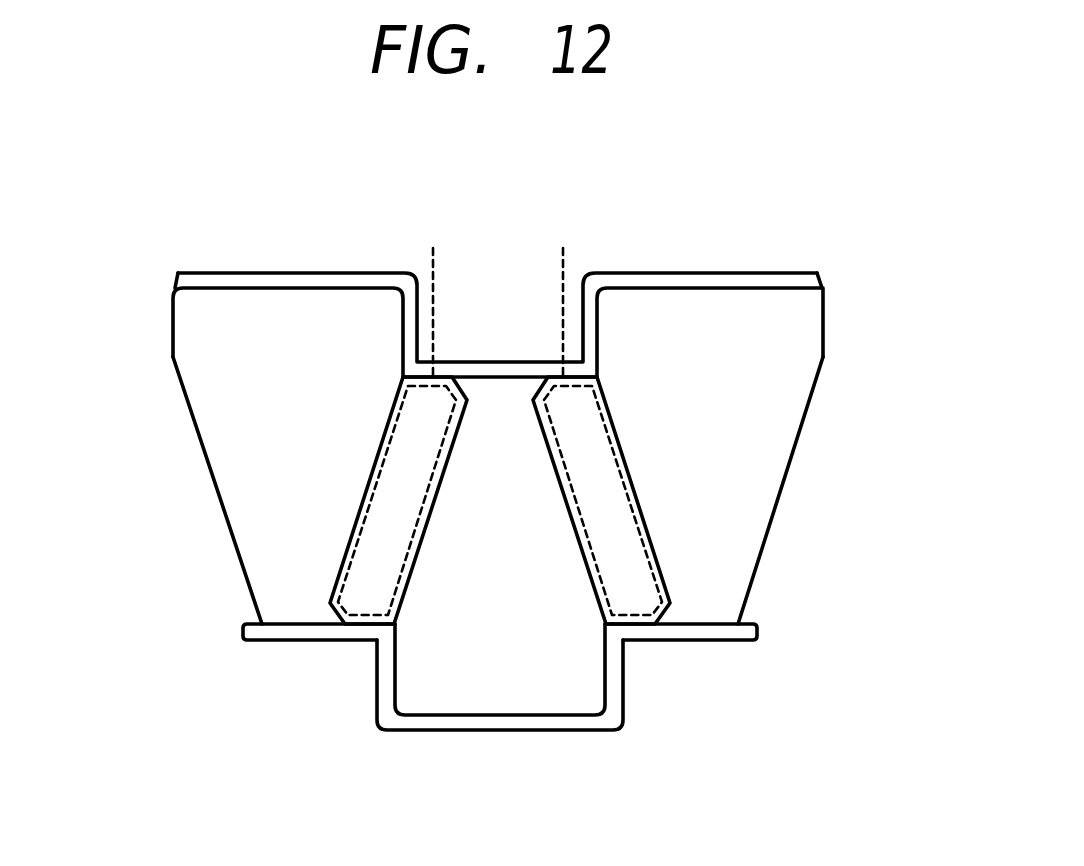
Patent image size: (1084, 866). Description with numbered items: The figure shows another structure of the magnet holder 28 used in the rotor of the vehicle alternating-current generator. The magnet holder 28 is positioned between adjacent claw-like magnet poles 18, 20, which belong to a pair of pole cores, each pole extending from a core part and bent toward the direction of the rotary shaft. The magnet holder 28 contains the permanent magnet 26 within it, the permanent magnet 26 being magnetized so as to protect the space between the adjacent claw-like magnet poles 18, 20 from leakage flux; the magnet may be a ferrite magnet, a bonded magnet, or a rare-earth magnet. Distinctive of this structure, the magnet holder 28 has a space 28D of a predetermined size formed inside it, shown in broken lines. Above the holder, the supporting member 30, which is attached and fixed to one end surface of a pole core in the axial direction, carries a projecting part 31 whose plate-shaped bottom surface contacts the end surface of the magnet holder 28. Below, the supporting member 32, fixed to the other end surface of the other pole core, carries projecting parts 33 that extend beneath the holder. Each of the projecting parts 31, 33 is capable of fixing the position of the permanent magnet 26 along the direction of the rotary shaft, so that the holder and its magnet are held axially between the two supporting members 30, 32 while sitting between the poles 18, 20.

The claw-like magnet pole 18 is at (222, 331).
The claw-like magnet pole 20 is at (553, 648).
The permanent magnet 26 is at (378, 528).
The magnet holder 28 is at (378, 453).
The space 28D is at (742, 722).
The supporting member 30 is at (658, 281).
The projecting part 31 is at (503, 372).
The supporting member 32 is at (482, 722).
The projecting part 33 is at (272, 640).